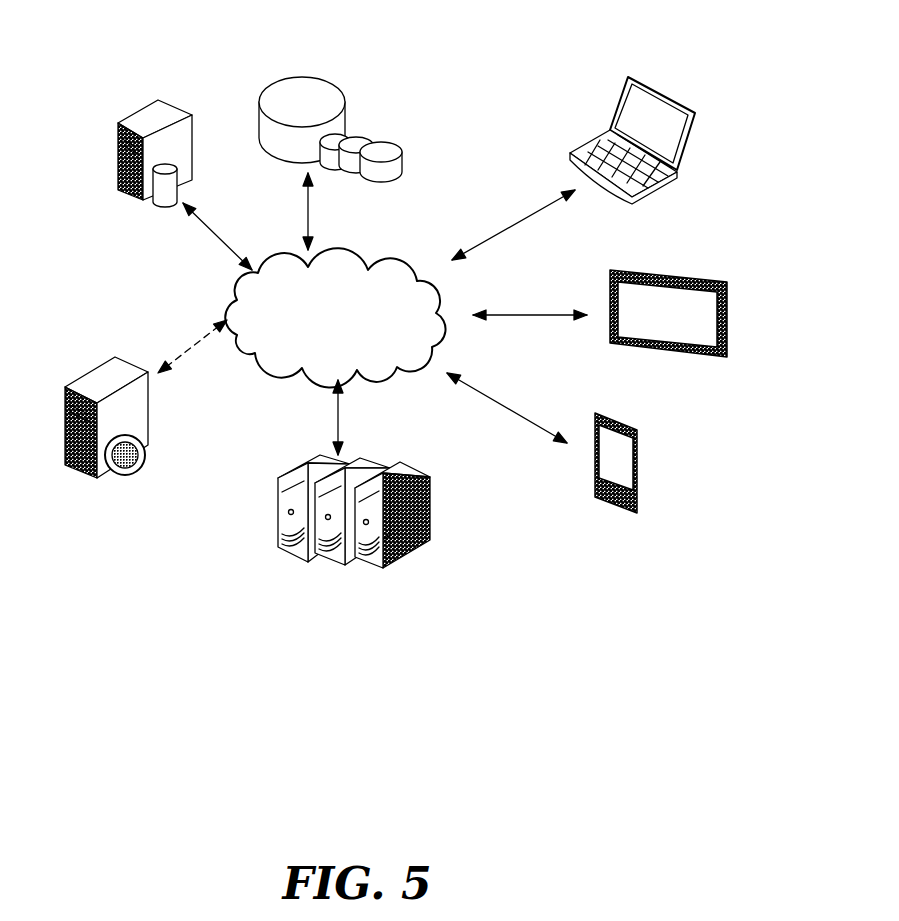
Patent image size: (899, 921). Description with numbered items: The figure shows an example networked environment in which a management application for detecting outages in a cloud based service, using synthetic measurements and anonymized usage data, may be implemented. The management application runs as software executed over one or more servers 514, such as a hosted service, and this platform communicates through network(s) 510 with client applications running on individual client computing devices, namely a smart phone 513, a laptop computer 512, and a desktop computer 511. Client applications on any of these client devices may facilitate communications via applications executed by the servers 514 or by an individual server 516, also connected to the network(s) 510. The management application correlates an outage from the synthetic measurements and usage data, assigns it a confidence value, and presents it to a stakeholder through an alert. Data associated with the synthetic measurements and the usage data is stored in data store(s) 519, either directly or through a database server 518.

The network(s) 510 is at (342, 246).
The desktop computer 511 is at (667, 78).
The laptop computer 512 is at (702, 255).
The smart phone 513 is at (643, 430).
The servers 514 is at (303, 458).
The individual server 516 is at (88, 365).
The database server 518 is at (153, 210).
The data store(s) 519 is at (315, 53).